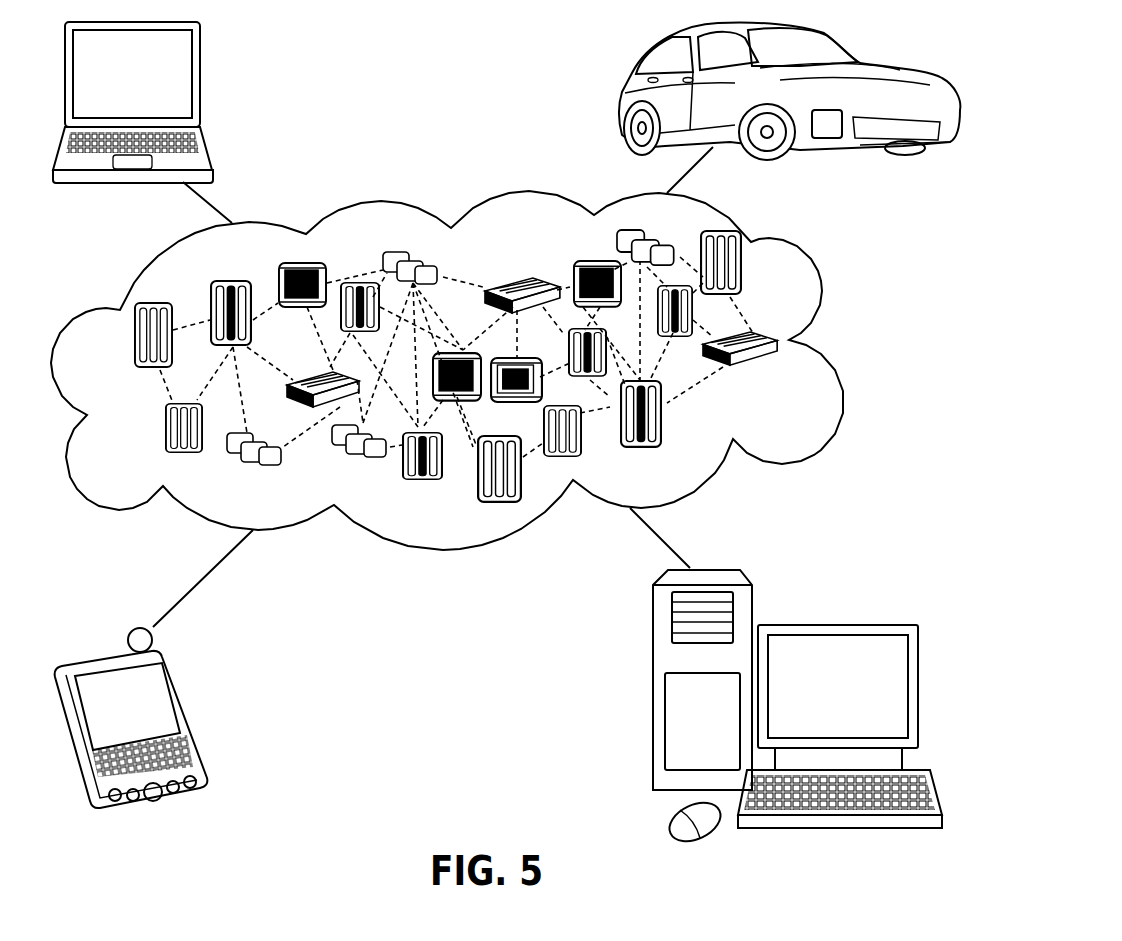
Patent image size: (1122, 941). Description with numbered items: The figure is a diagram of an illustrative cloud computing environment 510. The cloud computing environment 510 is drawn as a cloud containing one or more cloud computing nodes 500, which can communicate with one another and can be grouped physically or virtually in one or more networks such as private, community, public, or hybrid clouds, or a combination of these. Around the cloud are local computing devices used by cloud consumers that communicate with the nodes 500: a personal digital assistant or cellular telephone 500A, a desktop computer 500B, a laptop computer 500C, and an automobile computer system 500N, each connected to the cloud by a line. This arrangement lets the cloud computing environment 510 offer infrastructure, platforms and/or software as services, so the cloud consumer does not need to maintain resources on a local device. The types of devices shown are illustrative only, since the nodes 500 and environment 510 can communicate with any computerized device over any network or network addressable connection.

The cloud computing nodes 500 is at (790, 378).
The cloud computing environment 510 is at (840, 347).
The personal digital assistant (PDA) or cellular telephone 500A is at (190, 718).
The desktop computer 500B is at (835, 625).
The laptop computer 500C is at (200, 82).
The automobile computer system 500N is at (625, 97).